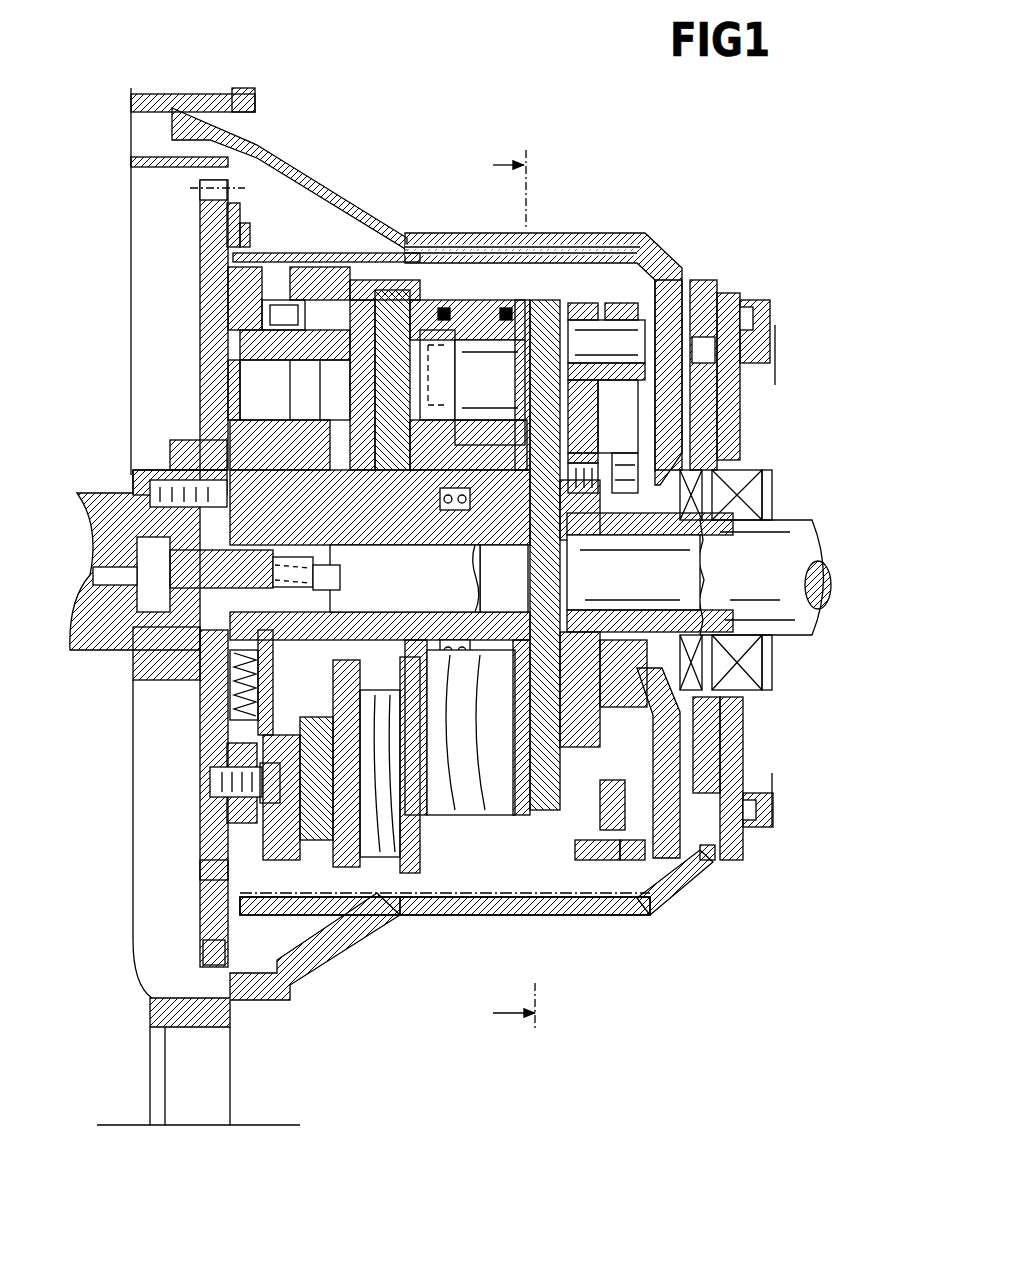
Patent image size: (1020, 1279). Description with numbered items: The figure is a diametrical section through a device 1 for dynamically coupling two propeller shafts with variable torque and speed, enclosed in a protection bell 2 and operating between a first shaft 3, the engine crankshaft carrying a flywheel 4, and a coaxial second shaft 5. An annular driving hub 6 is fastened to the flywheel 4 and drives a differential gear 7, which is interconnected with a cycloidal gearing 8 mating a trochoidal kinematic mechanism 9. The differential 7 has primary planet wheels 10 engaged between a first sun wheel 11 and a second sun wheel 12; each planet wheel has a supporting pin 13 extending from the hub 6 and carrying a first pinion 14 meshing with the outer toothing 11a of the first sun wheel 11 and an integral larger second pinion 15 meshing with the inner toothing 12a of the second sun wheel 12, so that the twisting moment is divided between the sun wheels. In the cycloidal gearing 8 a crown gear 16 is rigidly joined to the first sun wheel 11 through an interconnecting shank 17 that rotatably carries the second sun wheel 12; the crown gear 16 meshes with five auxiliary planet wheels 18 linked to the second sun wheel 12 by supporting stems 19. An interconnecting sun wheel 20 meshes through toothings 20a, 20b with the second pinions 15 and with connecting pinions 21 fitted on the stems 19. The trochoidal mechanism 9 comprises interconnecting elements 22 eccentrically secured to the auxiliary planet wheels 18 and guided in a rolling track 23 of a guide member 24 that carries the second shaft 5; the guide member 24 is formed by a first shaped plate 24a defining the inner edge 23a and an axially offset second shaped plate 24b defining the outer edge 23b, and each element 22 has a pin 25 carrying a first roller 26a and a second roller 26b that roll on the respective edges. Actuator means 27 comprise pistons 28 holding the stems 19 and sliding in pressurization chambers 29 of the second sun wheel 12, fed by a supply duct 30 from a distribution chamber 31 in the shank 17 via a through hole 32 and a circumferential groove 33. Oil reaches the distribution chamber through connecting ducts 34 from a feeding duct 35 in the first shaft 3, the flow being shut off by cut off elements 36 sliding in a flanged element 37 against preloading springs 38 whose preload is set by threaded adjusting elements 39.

The device for dynamic coupling 1 is at (690, 172).
The protection bell 2 is at (272, 168).
The first shaft 3 is at (100, 553).
The flywheel 4 is at (205, 758).
The second shaft 5 is at (750, 574).
The driving hub 6 is at (210, 812).
The differential gear 7 is at (255, 255).
The cycloidal gearing 8 is at (535, 860).
The trochoidal kinematic mechanism 9 is at (600, 853).
The primary planet wheels 10 is at (250, 290).
The first sun wheel 11 is at (215, 402).
The outer toothing 11a is at (230, 372).
The second sun wheel 12 is at (377, 300).
The inner toothing 12a is at (233, 923).
The supporting pin 13 is at (378, 240).
The first pinion 14 is at (235, 318).
The second pinion 15 is at (203, 228).
The crown gear 16 is at (765, 498).
The interconnecting shank 17 is at (477, 592).
The auxiliary planet wheels 18 is at (547, 307).
The supporting stems 19 is at (472, 394).
The interconnecting sun wheel 20 is at (457, 860).
The toothing 20a is at (305, 870).
The toothing 20b is at (416, 875).
The connecting pinions 21 is at (405, 270).
The interconnecting elements 22 is at (712, 295).
The rolling track 23 is at (625, 423).
The inner edge 23a is at (575, 860).
The outer edge 23b is at (717, 860).
The guide member 24 is at (637, 855).
The first shaped plate 24a is at (765, 657).
The second shaped plate 24b is at (660, 910).
The pin 25 is at (613, 335).
The first roller 26a is at (580, 307).
The second roller 26b is at (667, 258).
The actuator means 27 is at (477, 293).
The pistons 28 is at (411, 282).
The pressurization chamber 29 is at (497, 307).
The supply duct 30 is at (252, 345).
The distribution chamber 31 is at (385, 592).
The through hole 32 is at (645, 483).
The circumferential groove 33 is at (493, 860).
The connecting ducts 34 is at (200, 648).
The feeding duct 35 is at (100, 565).
The cut off elements 36 is at (160, 528).
The flanged element 37 is at (205, 432).
The preloading spring 38 is at (205, 683).
The threaded adjusting elements 39 is at (217, 752).